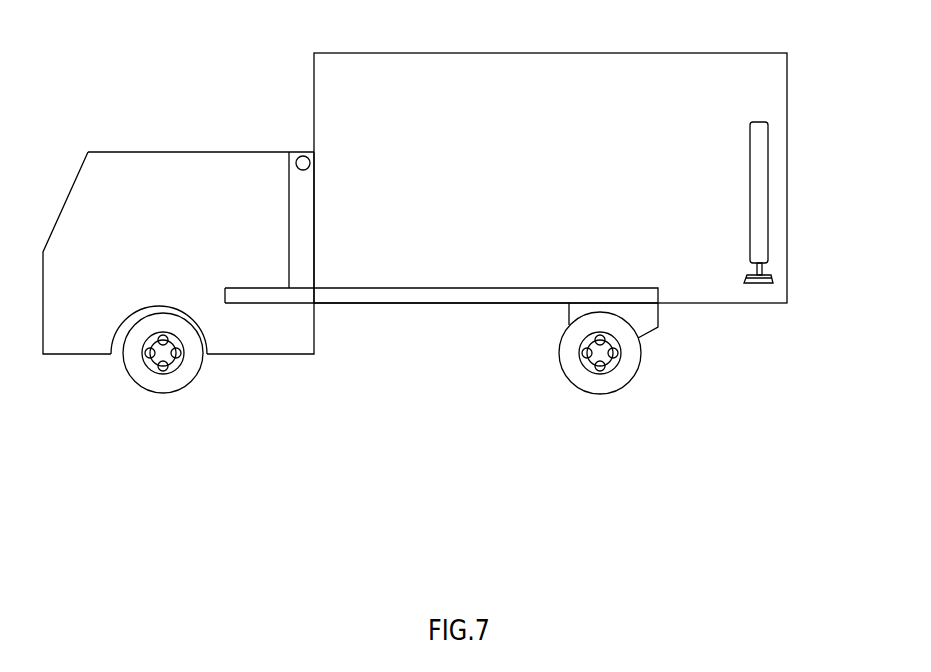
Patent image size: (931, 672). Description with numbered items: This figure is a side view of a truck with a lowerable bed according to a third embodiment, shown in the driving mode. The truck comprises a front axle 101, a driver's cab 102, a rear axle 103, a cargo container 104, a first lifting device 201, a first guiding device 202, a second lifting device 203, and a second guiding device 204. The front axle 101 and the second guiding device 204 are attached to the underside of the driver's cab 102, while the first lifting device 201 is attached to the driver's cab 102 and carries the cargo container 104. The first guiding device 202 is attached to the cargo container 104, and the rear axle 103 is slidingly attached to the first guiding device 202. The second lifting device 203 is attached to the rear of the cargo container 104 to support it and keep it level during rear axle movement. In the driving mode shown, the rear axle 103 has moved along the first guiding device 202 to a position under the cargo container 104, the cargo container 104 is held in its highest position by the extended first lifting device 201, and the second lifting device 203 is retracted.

The front axle 101 is at (145, 393).
The driver's cab 102 is at (110, 150).
The rear axle 103 is at (582, 392).
The cargo container 104 is at (436, 53).
The first lifting device 201 is at (303, 155).
The first guiding device 202 is at (457, 303).
The second lifting device 203 is at (758, 120).
The second guiding device 204 is at (229, 288).